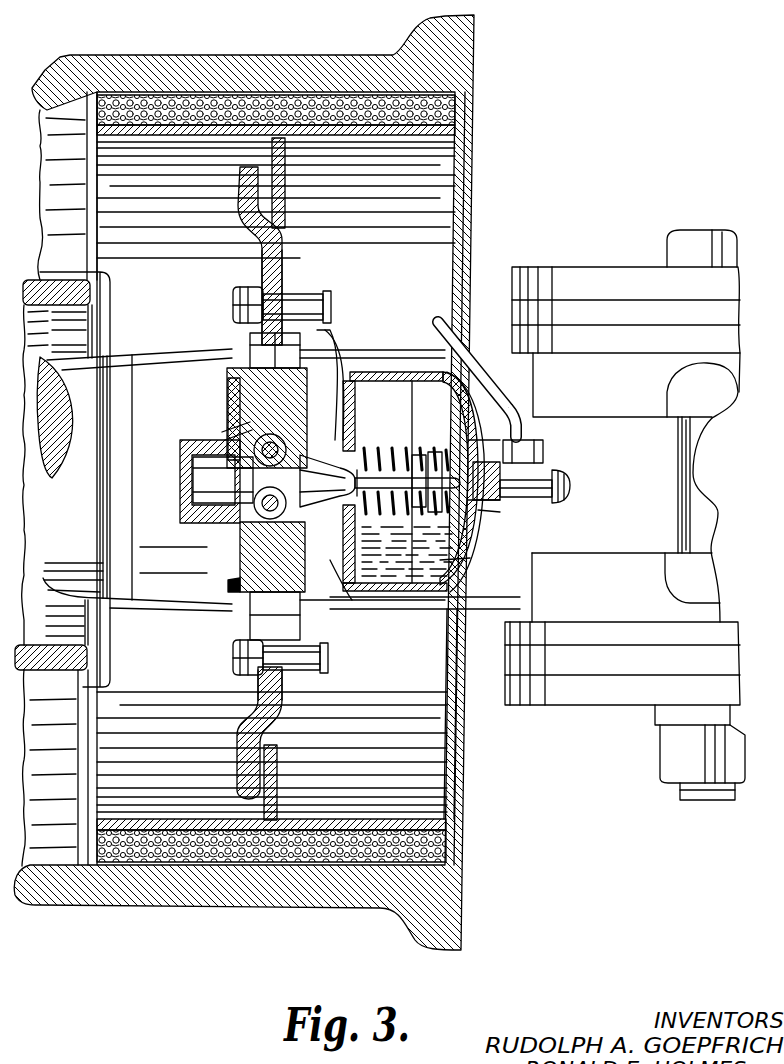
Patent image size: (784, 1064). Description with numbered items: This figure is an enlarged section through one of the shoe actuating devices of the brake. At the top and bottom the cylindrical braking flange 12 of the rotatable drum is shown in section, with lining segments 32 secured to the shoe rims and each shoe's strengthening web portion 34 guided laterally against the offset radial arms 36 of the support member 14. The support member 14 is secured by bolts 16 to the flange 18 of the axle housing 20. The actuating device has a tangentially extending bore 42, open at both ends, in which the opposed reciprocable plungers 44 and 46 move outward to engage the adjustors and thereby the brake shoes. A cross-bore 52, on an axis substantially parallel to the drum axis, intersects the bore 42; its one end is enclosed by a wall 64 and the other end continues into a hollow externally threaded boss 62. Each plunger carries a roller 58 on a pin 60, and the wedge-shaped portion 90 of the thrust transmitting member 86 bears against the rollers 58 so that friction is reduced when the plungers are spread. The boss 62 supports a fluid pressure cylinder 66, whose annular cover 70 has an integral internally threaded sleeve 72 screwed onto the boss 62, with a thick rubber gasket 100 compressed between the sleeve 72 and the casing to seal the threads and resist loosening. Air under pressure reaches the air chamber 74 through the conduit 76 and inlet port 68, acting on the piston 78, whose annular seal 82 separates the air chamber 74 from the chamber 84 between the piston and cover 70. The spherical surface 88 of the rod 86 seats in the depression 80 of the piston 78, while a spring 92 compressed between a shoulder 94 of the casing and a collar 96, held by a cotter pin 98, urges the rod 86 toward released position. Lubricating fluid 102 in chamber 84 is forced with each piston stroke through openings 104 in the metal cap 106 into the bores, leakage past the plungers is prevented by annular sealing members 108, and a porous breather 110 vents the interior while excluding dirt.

The cylindrical braking flange 12 is at (290, 52).
The lining segments 32 is at (455, 112).
The web portion 34 is at (286, 208).
The offset radial arms 36 is at (240, 222).
The support member 14 is at (293, 262).
The flange 18 is at (290, 290).
The bolts 16 is at (320, 302).
The axle housing 20 is at (376, 348).
The plunger 44 is at (248, 372).
The plunger 46 is at (243, 600).
The wedge-shaped portion 90 is at (262, 448).
The pin 60 is at (258, 503).
The cross-bore 52 is at (212, 526).
The roller 58 is at (195, 476).
The wall 64 is at (192, 458).
The tangentially extending bore 42 is at (232, 395).
The shoulder 94 is at (230, 428).
The breather 110 is at (232, 456).
The annular sealing members 108 is at (330, 345).
The externally threaded boss 62 is at (348, 380).
The internally threaded sleeve 72 is at (347, 585).
The annular cover 70 is at (398, 400).
The chamber 84 is at (440, 372).
The collar 96 is at (460, 383).
The groove or depression 80 is at (474, 448).
The thrust transmitting member 86 is at (384, 498).
The spring 92 is at (437, 498).
The metal cap 106 is at (370, 465).
The openings 104 is at (364, 444).
The cotter pin 98 is at (422, 455).
The lubricating fluid 102 is at (402, 562).
The annular seal 82 is at (458, 598).
The piston 78 is at (468, 562).
The rubber gasket 100 is at (338, 610).
The spherical surface 88 is at (478, 514).
The conduit 76 is at (488, 322).
The inlet port 68 is at (522, 442).
The air chamber 74 is at (492, 498).
The fluid pressure cylinder 66 is at (512, 588).